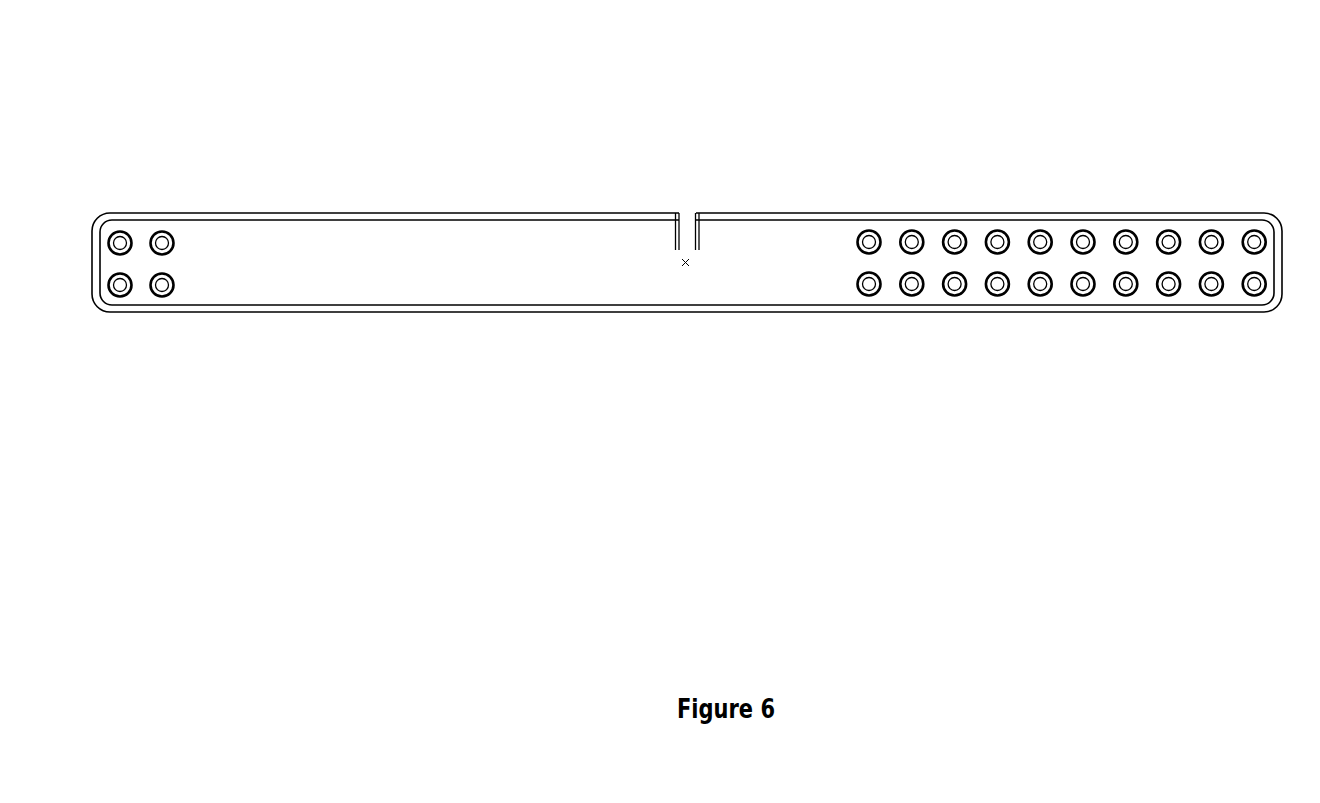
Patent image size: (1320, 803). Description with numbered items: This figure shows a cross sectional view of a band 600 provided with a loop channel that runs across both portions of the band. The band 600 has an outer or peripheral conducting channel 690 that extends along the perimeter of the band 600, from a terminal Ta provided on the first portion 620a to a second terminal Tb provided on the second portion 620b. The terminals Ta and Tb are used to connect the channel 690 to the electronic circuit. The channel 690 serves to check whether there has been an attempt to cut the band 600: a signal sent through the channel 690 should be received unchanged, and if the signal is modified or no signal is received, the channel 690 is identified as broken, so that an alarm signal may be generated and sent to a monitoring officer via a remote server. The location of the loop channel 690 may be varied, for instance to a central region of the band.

The band 600 is at (685, 311).
The peripheral conducting channel 690 is at (791, 205).
The first portion 620a is at (685, 345).
The second portion 620b is at (700, 345).
The terminal Ta is at (650, 237).
The second terminal Tb is at (711, 239).